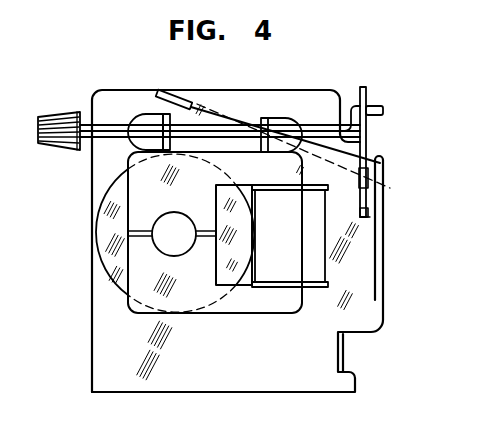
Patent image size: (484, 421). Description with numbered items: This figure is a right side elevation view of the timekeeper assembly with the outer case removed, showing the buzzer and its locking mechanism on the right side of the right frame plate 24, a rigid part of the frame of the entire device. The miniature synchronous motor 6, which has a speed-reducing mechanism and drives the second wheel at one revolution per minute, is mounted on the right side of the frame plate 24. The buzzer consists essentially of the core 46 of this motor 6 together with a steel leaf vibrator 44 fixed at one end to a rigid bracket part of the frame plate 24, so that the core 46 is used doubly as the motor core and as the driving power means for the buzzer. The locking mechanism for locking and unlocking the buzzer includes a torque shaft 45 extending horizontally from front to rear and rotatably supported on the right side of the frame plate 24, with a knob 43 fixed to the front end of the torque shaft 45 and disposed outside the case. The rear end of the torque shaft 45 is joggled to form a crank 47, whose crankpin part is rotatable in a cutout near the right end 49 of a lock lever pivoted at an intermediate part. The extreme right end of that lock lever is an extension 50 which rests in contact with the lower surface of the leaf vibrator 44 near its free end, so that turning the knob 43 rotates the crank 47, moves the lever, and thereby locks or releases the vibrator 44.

The miniature synchronous motor 6 is at (110, 231).
The right frame plate 24 is at (192, 107).
The knob 43 is at (58, 112).
The steel leaf vibrator 44 is at (332, 133).
The torque shaft 45 is at (133, 139).
The core 46 is at (275, 170).
The crank 47 is at (384, 110).
The right end of lock lever 49 is at (367, 91).
The extension 50 is at (357, 174).